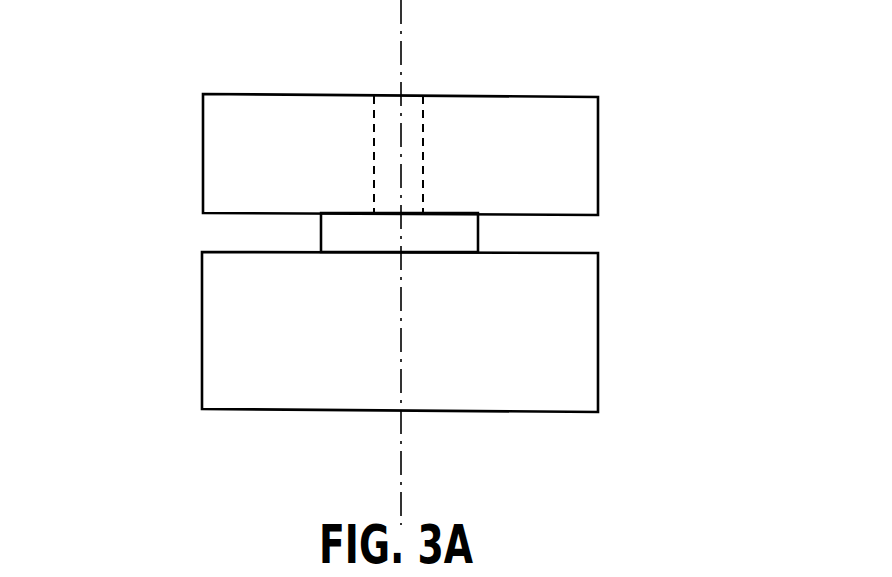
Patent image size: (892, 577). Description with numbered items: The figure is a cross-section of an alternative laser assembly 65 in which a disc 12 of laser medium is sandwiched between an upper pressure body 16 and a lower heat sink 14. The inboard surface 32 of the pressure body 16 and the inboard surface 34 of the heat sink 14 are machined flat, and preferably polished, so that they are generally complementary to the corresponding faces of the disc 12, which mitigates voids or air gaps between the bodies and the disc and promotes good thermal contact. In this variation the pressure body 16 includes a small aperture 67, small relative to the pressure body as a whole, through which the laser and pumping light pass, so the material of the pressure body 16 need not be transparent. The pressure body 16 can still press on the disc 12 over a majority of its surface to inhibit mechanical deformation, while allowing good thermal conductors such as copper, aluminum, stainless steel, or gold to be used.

The pressure body 16 is at (598, 132).
The heat sink 14 is at (598, 334).
The disc 12 is at (480, 238).
The inboard surface of the pressure body 32 is at (346, 213).
The inboard surface of the heat sink 34 is at (435, 252).
The aperture 67 is at (414, 95).
The laser assembly 65 is at (162, 316).